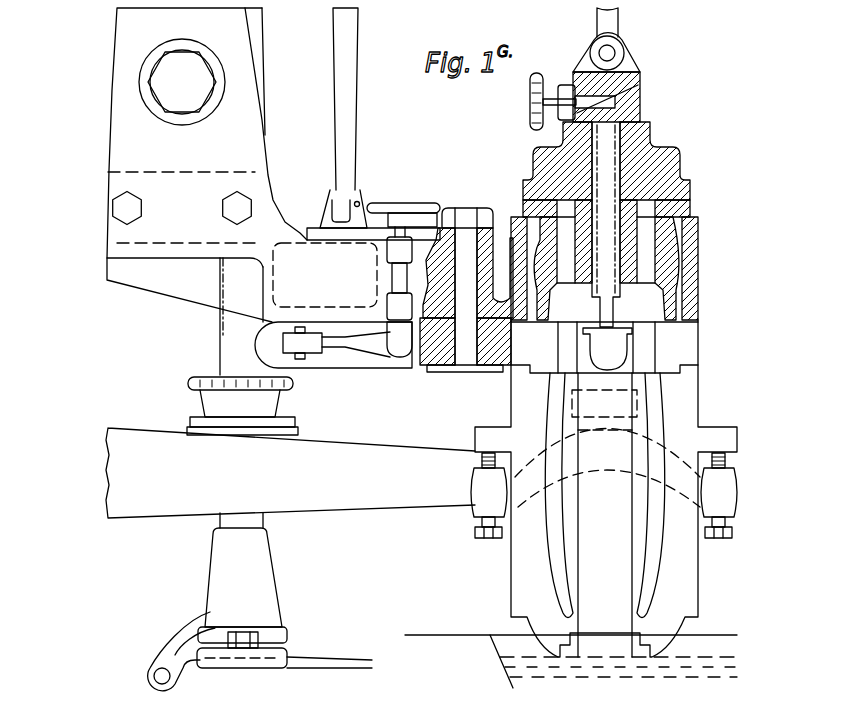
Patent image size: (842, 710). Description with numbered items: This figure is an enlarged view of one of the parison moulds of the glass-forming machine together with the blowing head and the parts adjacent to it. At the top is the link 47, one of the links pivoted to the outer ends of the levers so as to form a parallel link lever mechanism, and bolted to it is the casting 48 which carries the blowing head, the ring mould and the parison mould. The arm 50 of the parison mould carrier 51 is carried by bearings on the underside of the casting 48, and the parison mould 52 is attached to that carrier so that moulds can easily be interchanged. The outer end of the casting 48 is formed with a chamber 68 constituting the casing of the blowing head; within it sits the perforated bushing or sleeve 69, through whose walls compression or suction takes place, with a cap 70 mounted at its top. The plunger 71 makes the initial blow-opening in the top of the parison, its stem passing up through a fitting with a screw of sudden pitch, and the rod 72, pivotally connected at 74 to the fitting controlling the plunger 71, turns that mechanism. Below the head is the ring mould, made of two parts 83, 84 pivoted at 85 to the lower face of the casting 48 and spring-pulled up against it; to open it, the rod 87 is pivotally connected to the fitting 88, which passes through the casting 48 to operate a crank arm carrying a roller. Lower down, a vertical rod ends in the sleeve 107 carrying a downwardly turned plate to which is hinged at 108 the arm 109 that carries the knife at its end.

The link 47 is at (252, 143).
The casting 48 is at (171, 288).
The arm 50 is at (290, 473).
The parison mould carrier 51 is at (472, 510).
The parison mould 52 is at (607, 515).
The chamber 68 is at (700, 270).
The bushing or sleeve 69 is at (673, 300).
The cap 70 is at (677, 152).
The plunger 71 is at (612, 350).
The rod 72 is at (618, 25).
The pivot 74 is at (625, 50).
The ring mould part 83 is at (425, 360).
The ring mould part 84 is at (412, 342).
The pivot 85 is at (470, 373).
The rod 87 is at (356, 98).
The fitting 88 is at (363, 200).
The sleeve 107 is at (242, 585).
The hinge 108 is at (148, 672).
The arm 109 is at (283, 670).